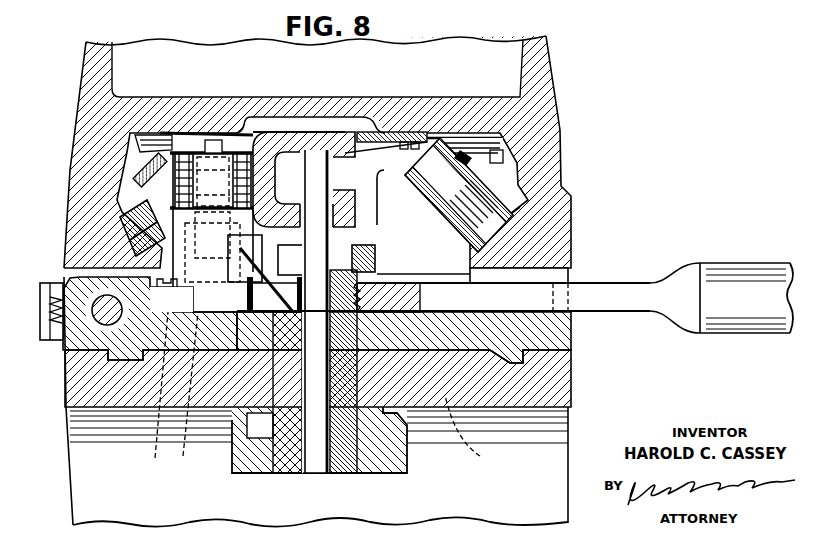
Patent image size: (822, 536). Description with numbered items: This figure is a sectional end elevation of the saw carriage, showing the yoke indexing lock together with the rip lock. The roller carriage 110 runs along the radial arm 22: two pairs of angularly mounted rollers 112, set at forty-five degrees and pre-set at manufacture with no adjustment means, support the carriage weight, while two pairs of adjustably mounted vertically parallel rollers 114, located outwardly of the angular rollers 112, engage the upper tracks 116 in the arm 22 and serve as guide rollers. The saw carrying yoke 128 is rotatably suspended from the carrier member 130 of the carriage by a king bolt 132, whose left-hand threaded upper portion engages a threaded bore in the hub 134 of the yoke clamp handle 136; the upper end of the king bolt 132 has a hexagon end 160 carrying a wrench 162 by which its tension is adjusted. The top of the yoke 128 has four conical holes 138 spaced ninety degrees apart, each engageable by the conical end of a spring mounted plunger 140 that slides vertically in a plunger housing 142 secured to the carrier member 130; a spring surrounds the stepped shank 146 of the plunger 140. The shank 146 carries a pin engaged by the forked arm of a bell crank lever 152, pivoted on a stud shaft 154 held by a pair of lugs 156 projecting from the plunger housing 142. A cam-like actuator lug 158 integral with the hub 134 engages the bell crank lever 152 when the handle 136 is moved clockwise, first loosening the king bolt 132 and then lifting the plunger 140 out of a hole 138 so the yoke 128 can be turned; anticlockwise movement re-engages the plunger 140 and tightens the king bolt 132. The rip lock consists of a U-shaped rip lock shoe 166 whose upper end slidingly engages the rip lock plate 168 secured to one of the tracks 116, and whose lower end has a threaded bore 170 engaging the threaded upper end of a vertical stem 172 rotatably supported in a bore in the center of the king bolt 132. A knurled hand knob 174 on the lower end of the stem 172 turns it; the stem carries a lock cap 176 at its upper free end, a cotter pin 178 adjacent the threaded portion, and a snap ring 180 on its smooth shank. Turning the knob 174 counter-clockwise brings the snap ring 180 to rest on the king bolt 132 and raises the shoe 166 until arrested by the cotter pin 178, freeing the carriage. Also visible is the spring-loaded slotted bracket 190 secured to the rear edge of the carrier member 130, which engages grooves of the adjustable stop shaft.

The arm 22 is at (554, 99).
The roller carriage 110 is at (395, 186).
The angularly mounted rollers 112 is at (121, 216).
The vertically parallel rollers 114 is at (153, 152).
The upper tracks 116 is at (250, 135).
The saw carrying yoke 128 is at (560, 387).
The carrier member 130 is at (566, 343).
The king bolt 132 is at (356, 340).
The hub 134 is at (254, 302).
The yoke clamp handle 136 is at (655, 283).
The conical holes 138 is at (342, 391).
The plunger 140 is at (141, 391).
The plunger housing 142 is at (150, 318).
The stepped shank 146 is at (210, 140).
The bell crank lever 152 is at (207, 140).
The stud shaft 154 is at (160, 180).
The lugs 156 is at (176, 150).
The actuator lug 158 is at (233, 243).
The hexagon end 160 is at (389, 247).
The wrench 162 is at (378, 263).
The rip lock shoe 166 is at (292, 131).
The rip lock plate 168 is at (378, 131).
The threaded bore 170 is at (277, 125).
The vertical stem 172 is at (311, 474).
The hand knob 174 is at (355, 474).
The lock cap 176 is at (333, 128).
The cotter pin 178 is at (350, 176).
The snap ring 180 is at (251, 273).
The slotted bracket 190 is at (44, 297).